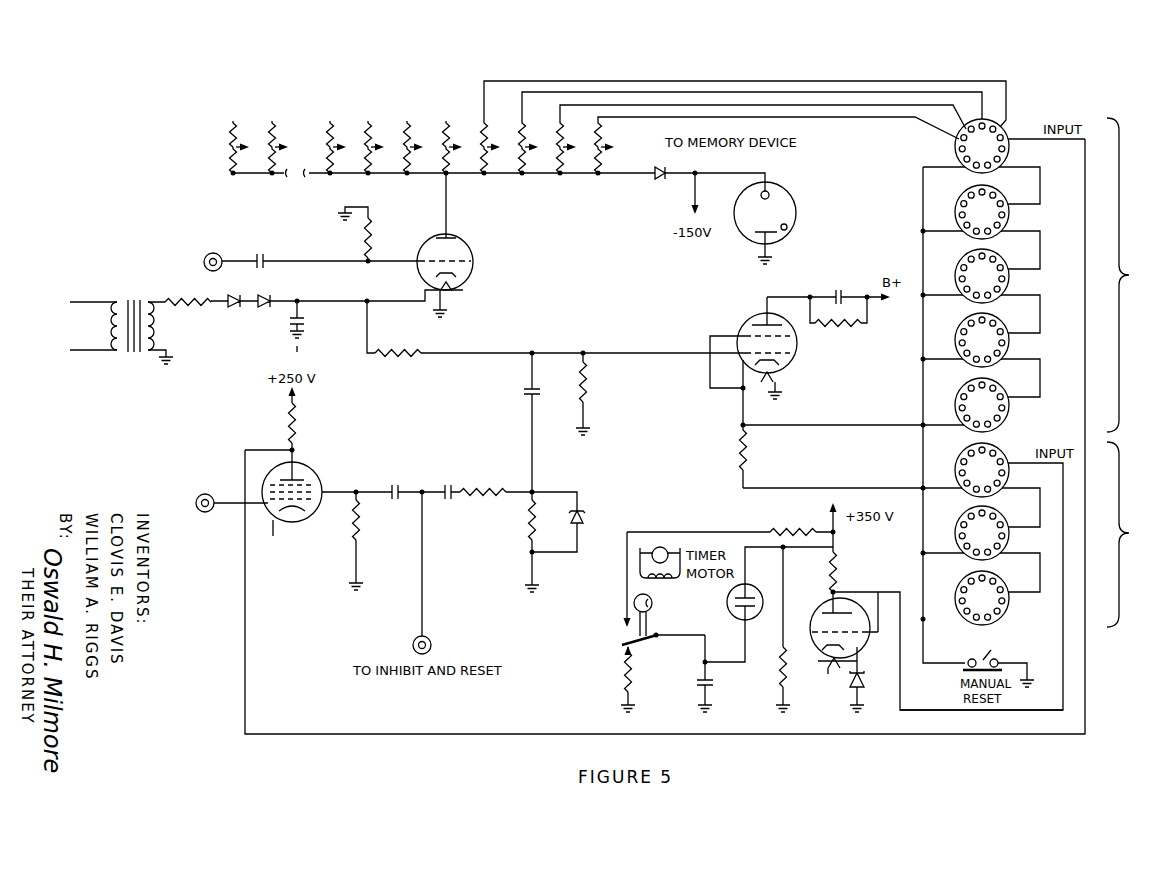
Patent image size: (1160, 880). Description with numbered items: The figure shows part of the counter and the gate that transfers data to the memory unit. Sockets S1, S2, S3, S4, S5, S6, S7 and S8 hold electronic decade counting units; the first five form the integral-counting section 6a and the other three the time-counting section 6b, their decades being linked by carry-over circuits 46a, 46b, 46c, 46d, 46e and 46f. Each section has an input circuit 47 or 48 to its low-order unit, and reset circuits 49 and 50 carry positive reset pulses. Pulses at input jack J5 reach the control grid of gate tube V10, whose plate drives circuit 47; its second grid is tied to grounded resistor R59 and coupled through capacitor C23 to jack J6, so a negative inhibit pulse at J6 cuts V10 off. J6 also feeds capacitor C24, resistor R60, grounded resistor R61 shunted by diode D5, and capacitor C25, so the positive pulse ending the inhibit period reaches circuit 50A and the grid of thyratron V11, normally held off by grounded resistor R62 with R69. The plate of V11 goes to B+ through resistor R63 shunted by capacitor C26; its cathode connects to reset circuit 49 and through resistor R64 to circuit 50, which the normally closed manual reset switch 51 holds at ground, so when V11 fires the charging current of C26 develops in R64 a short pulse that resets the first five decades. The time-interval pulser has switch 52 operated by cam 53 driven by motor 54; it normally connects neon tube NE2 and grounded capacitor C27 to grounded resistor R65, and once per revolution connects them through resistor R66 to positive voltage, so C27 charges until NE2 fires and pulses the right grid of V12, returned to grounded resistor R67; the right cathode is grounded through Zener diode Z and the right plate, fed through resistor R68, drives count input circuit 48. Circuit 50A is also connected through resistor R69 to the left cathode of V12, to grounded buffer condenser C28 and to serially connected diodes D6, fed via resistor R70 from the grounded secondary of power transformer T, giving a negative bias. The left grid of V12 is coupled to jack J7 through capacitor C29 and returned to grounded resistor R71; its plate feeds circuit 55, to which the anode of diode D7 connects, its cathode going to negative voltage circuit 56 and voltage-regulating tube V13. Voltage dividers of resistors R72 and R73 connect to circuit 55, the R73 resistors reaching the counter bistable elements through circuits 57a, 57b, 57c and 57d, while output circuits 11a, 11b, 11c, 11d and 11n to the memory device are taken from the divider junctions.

The output circuit 11n is at (232, 147).
The output circuit 11d is at (501, 147).
The output circuit 11c is at (539, 147).
The output circuit 11b is at (577, 147).
The output circuit 11a is at (622, 144).
The voltage-divider resistor R73 is at (228, 135).
The voltage-divider resistor R72 is at (228, 166).
The circuit 55 is at (528, 184).
The negative voltage circuit 56 is at (697, 192).
The circuit 57a is at (848, 118).
The circuit 57b is at (917, 122).
The circuit 57c is at (849, 90).
The circuit 57d is at (917, 80).
The diode D7 is at (658, 180).
The voltage-regulating tube V13 is at (785, 200).
The dual triode tube V12 is at (827, 603).
The thyratron V11 is at (758, 316).
The gate tube V10 is at (311, 467).
The jack J7 is at (203, 262).
The input jack J5 is at (225, 498).
The jack J6 is at (413, 642).
The coupling capacitor C29 is at (256, 269).
The buffer condenser C28 is at (303, 321).
The capacitor C26 is at (833, 290).
The capacitor C25 is at (524, 390).
The coupling capacitor C23 is at (400, 474).
The capacitor C24 is at (453, 474).
The capacitor C27 is at (705, 685).
The grounded resistor R71 is at (372, 238).
The resistor R70 is at (178, 308).
The resistor R69 is at (416, 337).
The grounded resistor R62 is at (591, 390).
The resistor R63 is at (853, 331).
The resistor R64 is at (749, 455).
The resistor R60 is at (497, 474).
The grounded resistor R59 is at (371, 524).
The grounded resistor R61 is at (527, 523).
The grounded resistor R65 is at (624, 684).
The resistor R66 is at (805, 523).
The grounded resistor R67 is at (779, 686).
The resistor R68 is at (838, 571).
The power transformer T is at (121, 322).
The serially connected diodes D6 is at (258, 308).
The diode D5 is at (584, 521).
The Zener diode Z is at (866, 679).
The neon tube NE2 is at (780, 583).
The circuit 50A is at (547, 351).
The reset circuit 49 is at (846, 422).
The reset circuit 50 is at (846, 487).
The socket S1 is at (1002, 129).
The socket S2 is at (1002, 196).
The socket S3 is at (1002, 260).
The socket S4 is at (1002, 324).
The socket S5 is at (1002, 389).
The socket S6 is at (1002, 454).
The socket S7 is at (1002, 517).
The socket S8 is at (1002, 581).
The carry-over circuit 46a is at (1040, 190).
The carry-over circuit 46b is at (1040, 254).
The carry-over circuit 46c is at (1040, 318).
The carry-over circuit 46d is at (1040, 384).
The carry-over circuit 46e is at (1012, 487).
The carry-over circuit 46f is at (1012, 553).
The input circuit 47 is at (1084, 421).
The input circuit 48 is at (1063, 633).
The integral-counting section 6a is at (1127, 275).
The time-counting section 6b is at (1128, 534).
The manual reset switch 51 is at (989, 650).
The single-pole double-throw switch 52 is at (640, 649).
The cam 53 is at (653, 606).
The electric motor 54 is at (681, 588).